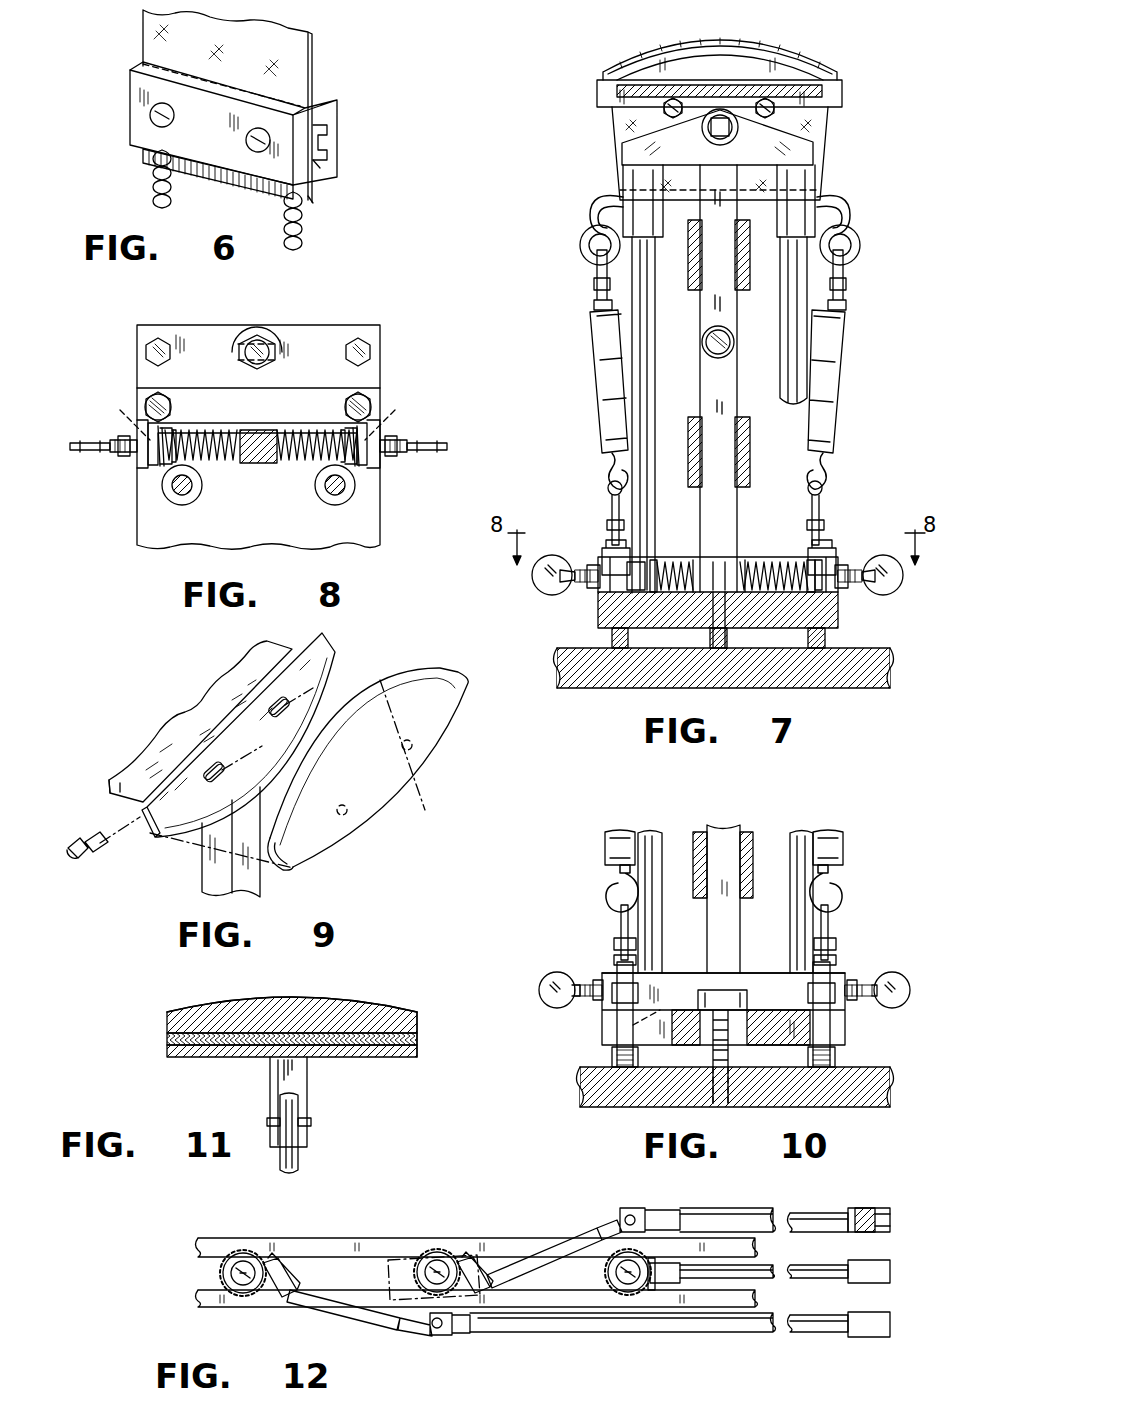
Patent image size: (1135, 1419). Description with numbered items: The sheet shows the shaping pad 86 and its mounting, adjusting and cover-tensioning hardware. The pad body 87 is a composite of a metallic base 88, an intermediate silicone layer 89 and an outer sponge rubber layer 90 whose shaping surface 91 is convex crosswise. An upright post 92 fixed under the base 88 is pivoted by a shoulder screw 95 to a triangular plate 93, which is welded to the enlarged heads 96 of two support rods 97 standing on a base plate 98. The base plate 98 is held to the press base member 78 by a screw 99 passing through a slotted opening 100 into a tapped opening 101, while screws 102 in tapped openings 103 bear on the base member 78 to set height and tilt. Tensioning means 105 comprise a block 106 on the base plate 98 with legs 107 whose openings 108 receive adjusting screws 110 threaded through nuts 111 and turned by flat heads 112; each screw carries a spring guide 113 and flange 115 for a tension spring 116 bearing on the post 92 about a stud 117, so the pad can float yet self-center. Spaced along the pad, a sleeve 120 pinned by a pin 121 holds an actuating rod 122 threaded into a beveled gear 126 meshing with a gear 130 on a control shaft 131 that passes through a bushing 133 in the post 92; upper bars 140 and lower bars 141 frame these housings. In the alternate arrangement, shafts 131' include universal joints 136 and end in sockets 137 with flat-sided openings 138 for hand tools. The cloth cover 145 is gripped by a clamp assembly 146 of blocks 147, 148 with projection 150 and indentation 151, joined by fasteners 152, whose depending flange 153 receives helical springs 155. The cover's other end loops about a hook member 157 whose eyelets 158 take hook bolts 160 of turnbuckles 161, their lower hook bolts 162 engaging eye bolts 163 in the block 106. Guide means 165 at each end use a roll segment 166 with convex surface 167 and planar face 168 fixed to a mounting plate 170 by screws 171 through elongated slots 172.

In FIG. 7, the press base member 78 is at (868, 683).
In FIG. 10, the press base member 78 is at (587, 1090).
In FIG. 11, the shaping pad 86 is at (392, 995).
In FIG. 11, the body 87 is at (418, 1027).
In FIG. 9, the metallic base 88 is at (158, 753).
In FIG. 11, the metallic base 88 is at (180, 1053).
In FIG. 7, the metallic base 88 is at (630, 88).
In FIG. 11, the intermediate layer 89 is at (167, 1037).
In FIG. 11, the outer layer 90 is at (187, 1012).
In FIG. 11, the shaping surface 91 is at (317, 993).
In FIG. 8, the upright post 92 is at (257, 440).
In FIG. 9, the upright post 92 is at (205, 863).
In FIG. 7, the upright post 92 is at (718, 378).
In FIG. 10, the upright post 92 is at (720, 837).
In FIG. 7, the plate 93 is at (627, 143).
In FIG. 7, the shoulder screw 95 is at (728, 133).
In FIG. 7, the enlarged heads 96 is at (632, 177).
In FIG. 8, the support rods 97 is at (185, 495).
In FIG. 7, the support rods 97 is at (648, 277).
In FIG. 10, the support rods 97 is at (653, 833).
In FIG. 8, the base plate 98 is at (338, 325).
In FIG. 7, the base plate 98 is at (660, 628).
In FIG. 10, the base plate 98 is at (605, 1023).
In FIG. 8, the screw 99 is at (257, 345).
In FIG. 7, the screw 99 is at (727, 648).
In FIG. 10, the screw 99 is at (710, 992).
In FIG. 8, the slotted opening 100 is at (275, 350).
In FIG. 10, the slotted opening 100 is at (747, 1005).
In FIG. 10, the tapped opening 101 is at (723, 1107).
In FIG. 8, the screws 102 is at (158, 345).
In FIG. 7, the screws 102 is at (612, 638).
In FIG. 10, the screws 102 is at (612, 1057).
In FIG. 10, the tapped openings 103 is at (650, 1013).
In FIG. 8, the tensioning means 105 is at (128, 520).
In FIG. 7, the tensioning means 105 is at (845, 543).
In FIG. 8, the block 106 is at (205, 388).
In FIG. 7, the block 106 is at (685, 560).
In FIG. 10, the block 106 is at (750, 980).
In FIG. 8, the legs 107 is at (135, 465).
In FIG. 7, the legs 107 is at (600, 557).
In FIG. 8, the openings 108 is at (125, 410).
In FIG. 8, the adjusting screws 110 is at (118, 440).
In FIG. 7, the adjusting screws 110 is at (583, 567).
In FIG. 10, the adjusting screws 110 is at (580, 977).
In FIG. 8, the nut 111 is at (122, 458).
In FIG. 7, the nut 111 is at (587, 587).
In FIG. 10, the nut 111 is at (598, 983).
In FIG. 8, the flat head 112 is at (72, 448).
In FIG. 7, the flat head 112 is at (538, 580).
In FIG. 10, the flat head 112 is at (548, 983).
In FIG. 8, the spring guide 113 is at (345, 440).
In FIG. 7, the spring guide 113 is at (800, 570).
In FIG. 8, the flange 115 is at (170, 440).
In FIG. 7, the flange 115 is at (613, 585).
In FIG. 8, the tension spring 116 is at (205, 463).
In FIG. 7, the tension spring 116 is at (667, 560).
In FIG. 8, the stud 117 is at (277, 465).
In FIG. 7, the stud 117 is at (715, 565).
In FIG. 11, the sleeve 120 is at (308, 1080).
In FIG. 11, the pin 121 is at (268, 1120).
In FIG. 11, the actuating rod 122 is at (298, 1160).
In FIG. 12, the actuating rod 122 is at (237, 1268).
In FIG. 12, the beveled gear 126 is at (253, 1250).
In FIG. 12, the beveled gear 130 is at (277, 1298).
In FIG. 7, the control shaft 131 is at (745, 323).
In FIG. 12, the control shafts 131' is at (809, 1269).
In FIG. 7, the second bushing 133 is at (702, 342).
In FIG. 12, the universal joint 136 is at (608, 1205).
In FIG. 12, the sockets 137 is at (863, 1208).
In FIG. 12, the flat sided openings 138 is at (890, 1220).
In FIG. 7, the upper bars 140 is at (737, 230).
In FIG. 7, the lower bars 141 is at (752, 420).
In FIG. 10, the lower bars 141 is at (743, 853).
In FIG. 12, the lower bars 141 is at (723, 1247).
In FIG. 6, the cover 145 is at (310, 62).
In FIG. 7, the cover 145 is at (787, 48).
In FIG. 6, the clamp assembly 146 is at (126, 86).
In FIG. 6, the block 147 is at (137, 113).
In FIG. 6, the block 148 is at (333, 112).
In FIG. 6, the projection 150 is at (315, 162).
In FIG. 6, the indentation 151 is at (320, 142).
In FIG. 6, the fasteners 152 is at (167, 112).
In FIG. 6, the depending flange 153 is at (313, 200).
In FIG. 6, the helical springs 155 is at (242, 207).
In FIG. 7, the hook member 157 is at (603, 198).
In FIG. 7, the eyelets 158 is at (580, 243).
In FIG. 7, the hook bolts 160 is at (593, 283).
In FIG. 7, the turnbuckles 161 is at (593, 337).
In FIG. 10, the turnbuckles 161 is at (603, 823).
In FIG. 7, the hook bolts 162 is at (612, 470).
In FIG. 10, the hook bolts 162 is at (613, 893).
In FIG. 8, the eye bolts 163 is at (150, 400).
In FIG. 7, the eye bolts 163 is at (613, 533).
In FIG. 10, the eye bolts 163 is at (623, 937).
In FIG. 9, the guide means 165 is at (418, 622).
In FIG. 7, the guide means 165 is at (588, 70).
In FIG. 9, the roll segment 166 is at (462, 690).
In FIG. 7, the roll segment 166 is at (683, 63).
In FIG. 9, the convex surface 167 is at (395, 782).
In FIG. 9, the planar face 168 is at (277, 855).
In FIG. 9, the mounting plate 170 is at (330, 660).
In FIG. 7, the mounting plate 170 is at (838, 95).
In FIG. 9, the screws 171 is at (77, 868).
In FIG. 7, the screws 171 is at (765, 100).
In FIG. 9, the elongated slots 172 is at (218, 763).